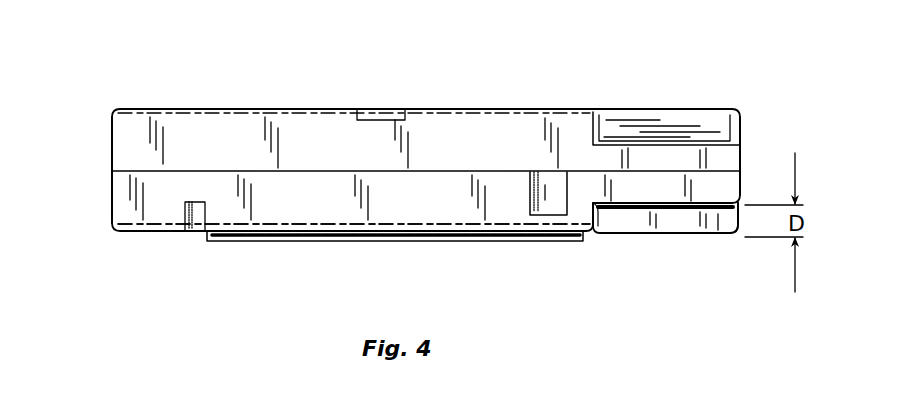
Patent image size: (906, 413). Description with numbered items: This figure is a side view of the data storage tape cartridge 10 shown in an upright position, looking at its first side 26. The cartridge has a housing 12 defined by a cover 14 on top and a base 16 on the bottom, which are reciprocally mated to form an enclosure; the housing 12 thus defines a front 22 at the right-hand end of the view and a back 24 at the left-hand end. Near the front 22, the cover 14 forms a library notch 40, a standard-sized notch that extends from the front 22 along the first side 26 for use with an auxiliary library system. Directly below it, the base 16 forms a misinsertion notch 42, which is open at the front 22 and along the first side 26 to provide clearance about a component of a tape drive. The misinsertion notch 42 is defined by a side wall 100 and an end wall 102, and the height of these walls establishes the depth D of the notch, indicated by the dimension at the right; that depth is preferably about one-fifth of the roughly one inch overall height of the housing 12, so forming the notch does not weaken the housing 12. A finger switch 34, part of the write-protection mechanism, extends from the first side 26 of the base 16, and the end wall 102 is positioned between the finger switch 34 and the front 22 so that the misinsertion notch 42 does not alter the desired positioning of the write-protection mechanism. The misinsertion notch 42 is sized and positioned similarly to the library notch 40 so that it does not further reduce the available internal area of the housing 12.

The data storage tape cartridge 10 is at (501, 70).
The housing 12 is at (112, 132).
The cover 14 is at (238, 107).
The base 16 is at (285, 248).
The front 22 is at (742, 160).
The back 24 is at (110, 185).
The first side 26 is at (450, 212).
The finger switch 34 is at (540, 206).
The library notch 40 is at (697, 120).
The misinsertion notch 42 is at (690, 229).
The side wall 100 is at (722, 236).
The end wall 102 is at (603, 218).